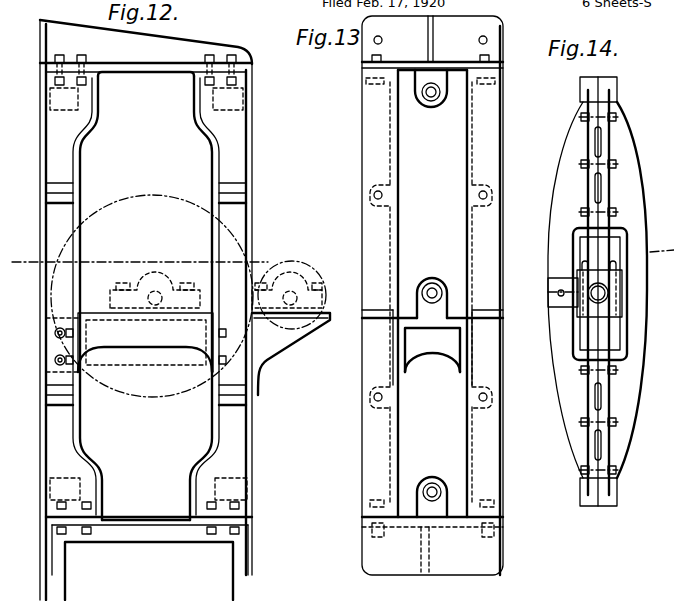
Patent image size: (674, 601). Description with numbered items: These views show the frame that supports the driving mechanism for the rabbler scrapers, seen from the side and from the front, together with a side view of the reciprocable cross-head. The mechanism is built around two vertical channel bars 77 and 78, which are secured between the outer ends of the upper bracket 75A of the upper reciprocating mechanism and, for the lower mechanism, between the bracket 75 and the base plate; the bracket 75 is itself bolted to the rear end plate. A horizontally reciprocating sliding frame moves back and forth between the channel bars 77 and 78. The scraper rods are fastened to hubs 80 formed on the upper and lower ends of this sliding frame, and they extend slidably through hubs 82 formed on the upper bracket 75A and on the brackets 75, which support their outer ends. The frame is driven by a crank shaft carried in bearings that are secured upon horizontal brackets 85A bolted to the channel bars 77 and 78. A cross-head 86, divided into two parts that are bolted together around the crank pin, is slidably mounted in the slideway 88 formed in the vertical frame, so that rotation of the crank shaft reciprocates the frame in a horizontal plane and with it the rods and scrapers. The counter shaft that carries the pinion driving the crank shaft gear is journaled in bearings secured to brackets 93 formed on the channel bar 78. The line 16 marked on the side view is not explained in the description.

In FIG. 12, the bracket 75 is at (46, 554).
In FIG. 13, the bracket 75 is at (372, 547).
In FIG. 12, the upper bracket 75A is at (170, 46).
In FIG. 13, the upper bracket 75A is at (485, 28).
In FIG. 12, the vertical channel bar 77 is at (40, 150).
In FIG. 12, the vertical channel bar 78 is at (252, 140).
In FIG. 13, the vertical channel bar 78 is at (362, 170).
In FIG. 12, the rail section line 16 is at (165, 296).
In FIG. 12, the hub 82 is at (77, 478).
In FIG. 13, the hub 82 is at (432, 105).
In FIG. 12, the horizontal bracket 85A is at (160, 332).
In FIG. 12, the bracket 93 is at (273, 337).
In FIG. 13, the bracket 93 is at (375, 313).
In FIG. 14, the hub 80 is at (610, 83).
In FIG. 14, the slideway 88 is at (573, 252).
In FIG. 14, the cross-head 86 is at (603, 312).